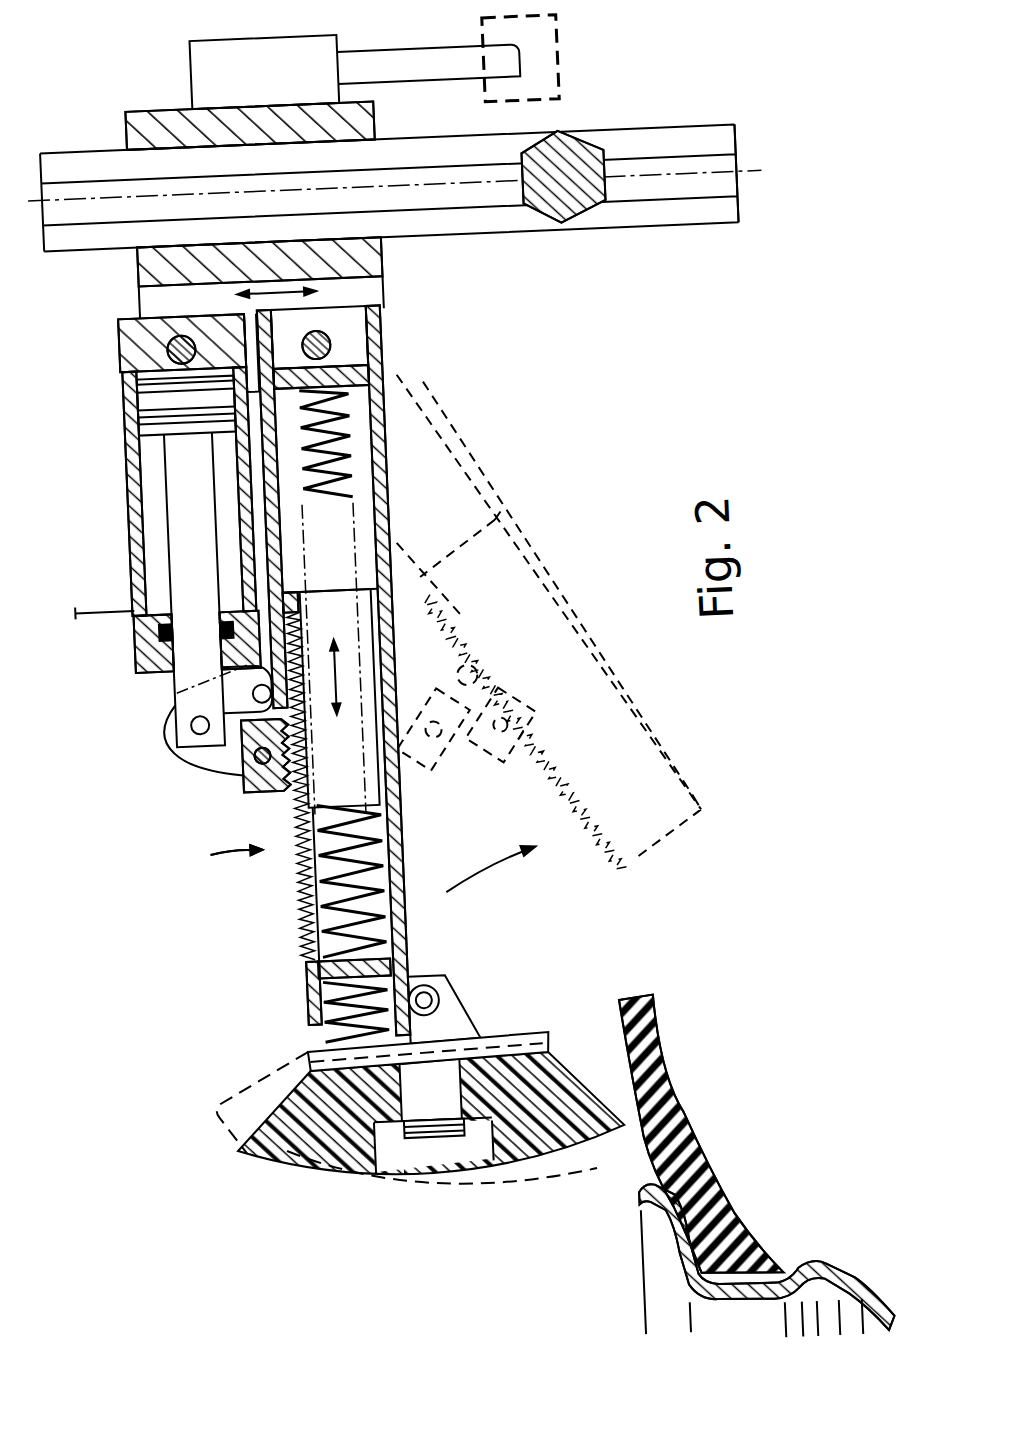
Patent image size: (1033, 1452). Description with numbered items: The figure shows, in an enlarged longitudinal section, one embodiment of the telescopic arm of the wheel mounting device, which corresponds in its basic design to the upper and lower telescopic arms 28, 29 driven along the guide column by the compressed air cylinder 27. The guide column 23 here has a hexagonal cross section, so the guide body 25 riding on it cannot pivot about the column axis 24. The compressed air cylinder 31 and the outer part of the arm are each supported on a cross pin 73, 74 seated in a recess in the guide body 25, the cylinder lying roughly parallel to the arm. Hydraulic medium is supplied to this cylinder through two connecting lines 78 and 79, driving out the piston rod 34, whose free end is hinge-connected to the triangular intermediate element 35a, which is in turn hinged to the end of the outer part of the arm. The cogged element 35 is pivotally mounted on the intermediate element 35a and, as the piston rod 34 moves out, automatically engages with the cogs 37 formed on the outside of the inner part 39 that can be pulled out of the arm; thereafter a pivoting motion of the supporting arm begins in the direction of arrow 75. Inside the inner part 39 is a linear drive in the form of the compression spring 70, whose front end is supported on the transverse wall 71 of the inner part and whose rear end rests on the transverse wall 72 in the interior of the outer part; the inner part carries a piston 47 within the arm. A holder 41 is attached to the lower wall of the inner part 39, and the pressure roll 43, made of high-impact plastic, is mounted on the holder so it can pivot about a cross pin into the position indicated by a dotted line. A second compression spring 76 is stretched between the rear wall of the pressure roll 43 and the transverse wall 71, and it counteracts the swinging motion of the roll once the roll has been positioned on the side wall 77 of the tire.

The guide column 23 is at (508, 238).
The column axis 24 is at (760, 186).
The guide body 25 is at (182, 109).
The compressed air cylinder 27 is at (566, 60).
The upper telescopic arm 28 is at (224, 886).
The lower telescopic arm 29 is at (236, 851).
The compressed air cylinder 31 is at (159, 536).
The piston rod 34 is at (180, 682).
The cogged element 35 is at (252, 785).
The triangular intermediate element 35a is at (236, 773).
The cogs 37 is at (288, 908).
The inner part 39 is at (373, 945).
The holder 41 is at (423, 992).
The pressure roll 43 is at (281, 1157).
The piston 47 is at (338, 724).
The compression spring 70 is at (387, 861).
The transverse wall 71 is at (289, 960).
The transverse wall 72 is at (399, 376).
The cross pin 73 is at (181, 333).
The cross pin 74 is at (342, 334).
The arrow 75 is at (439, 882).
The compression spring 76 is at (289, 998).
The side wall of the tire 77 is at (629, 1074).
The connecting line 78 is at (75, 607).
The connecting line 79 is at (64, 364).